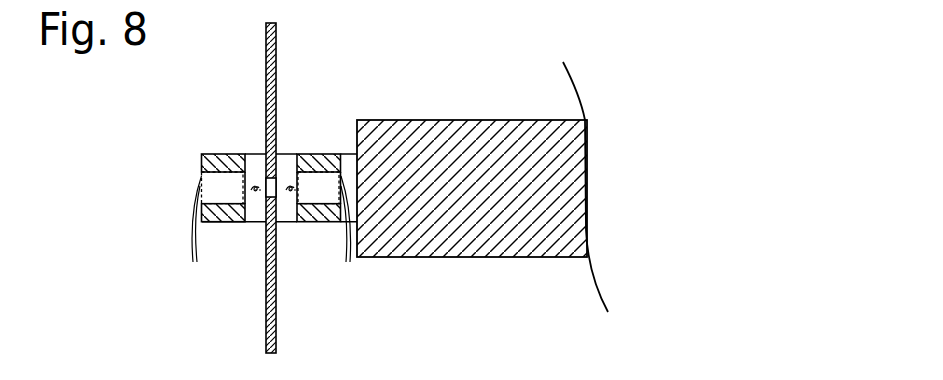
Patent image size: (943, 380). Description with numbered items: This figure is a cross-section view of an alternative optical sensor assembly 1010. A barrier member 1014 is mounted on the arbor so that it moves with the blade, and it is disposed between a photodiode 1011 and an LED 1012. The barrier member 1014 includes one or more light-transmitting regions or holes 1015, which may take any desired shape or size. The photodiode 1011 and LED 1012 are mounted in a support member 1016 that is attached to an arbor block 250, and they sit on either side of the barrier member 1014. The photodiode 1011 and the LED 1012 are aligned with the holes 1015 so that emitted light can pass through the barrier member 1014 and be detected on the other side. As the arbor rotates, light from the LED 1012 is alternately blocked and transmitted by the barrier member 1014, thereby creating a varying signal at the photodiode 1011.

The optical sensor assembly 1010 is at (393, 75).
The photodiode 1011 is at (317, 187).
The LED 1012 is at (225, 185).
The barrier member 1014 is at (276, 313).
The light-transmitting regions or holes 1015 is at (265, 176).
The support member 1016 is at (230, 223).
The arbor block 250 is at (490, 243).